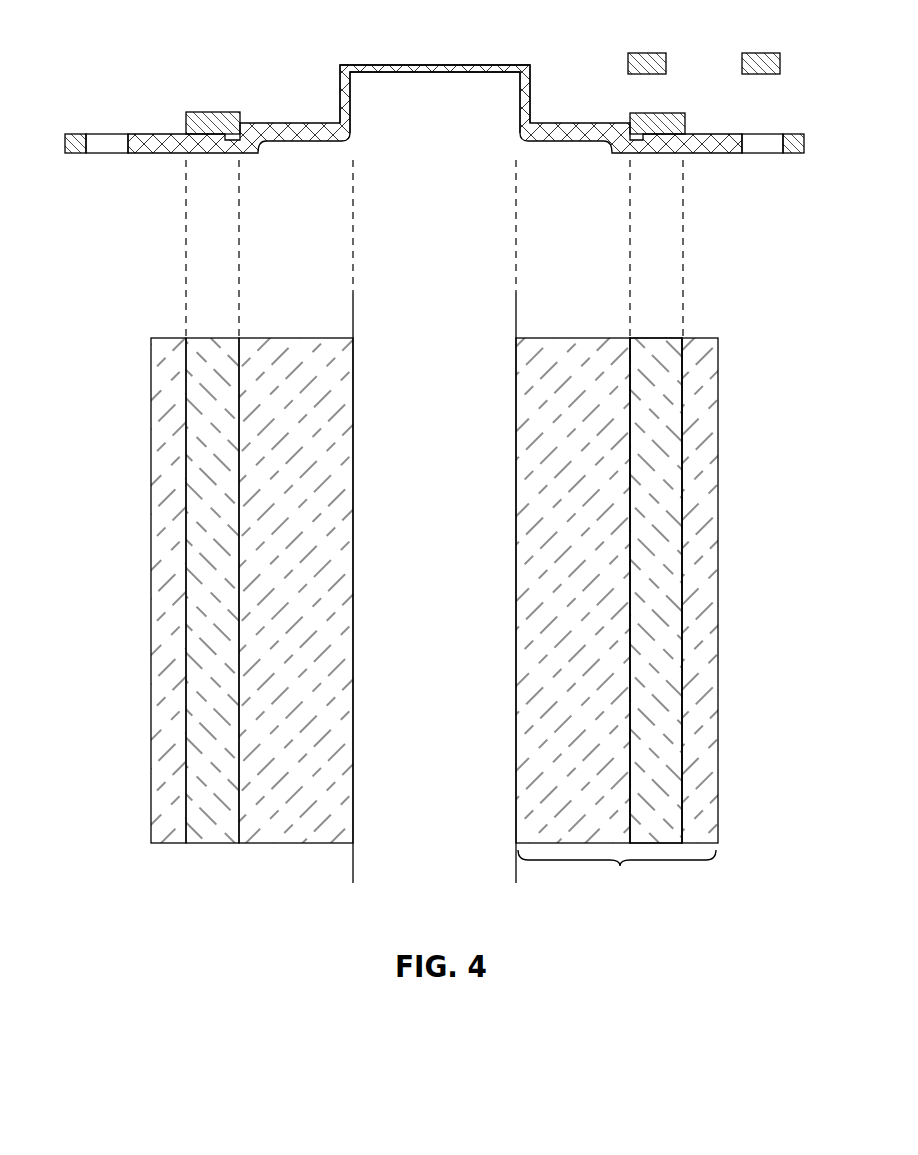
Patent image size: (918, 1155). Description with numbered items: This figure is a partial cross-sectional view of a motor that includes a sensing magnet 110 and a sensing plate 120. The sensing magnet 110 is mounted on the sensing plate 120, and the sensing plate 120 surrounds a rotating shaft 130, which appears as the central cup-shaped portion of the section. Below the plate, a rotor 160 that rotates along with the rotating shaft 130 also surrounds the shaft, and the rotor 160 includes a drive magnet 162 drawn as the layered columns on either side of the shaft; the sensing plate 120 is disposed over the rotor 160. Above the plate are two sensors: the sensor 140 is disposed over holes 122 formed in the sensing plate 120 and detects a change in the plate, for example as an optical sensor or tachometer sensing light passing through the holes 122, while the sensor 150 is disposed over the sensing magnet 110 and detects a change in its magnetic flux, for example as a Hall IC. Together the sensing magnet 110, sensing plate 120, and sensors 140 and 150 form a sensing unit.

The sensing magnet 110 is at (687, 120).
The sensing plate 120 is at (711, 148).
The holes 122 is at (792, 153).
The rotating shaft 130 is at (490, 65).
The sensor 140 is at (762, 44).
The sensor 150 is at (650, 44).
The rotor 160 is at (617, 618).
The drive magnet 162 is at (214, 592).